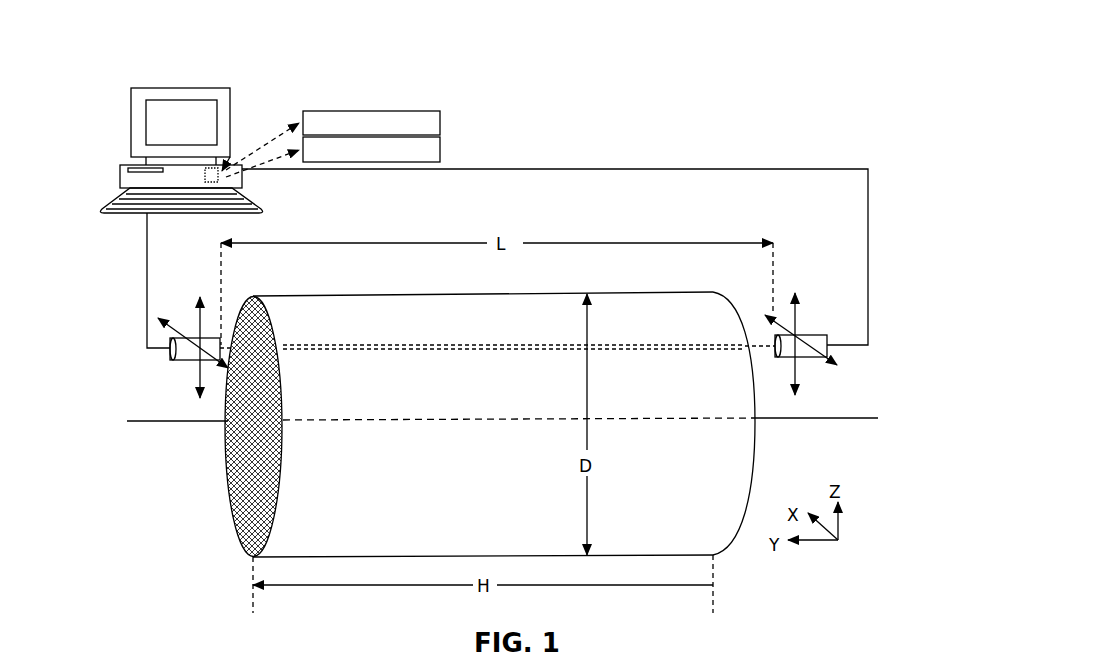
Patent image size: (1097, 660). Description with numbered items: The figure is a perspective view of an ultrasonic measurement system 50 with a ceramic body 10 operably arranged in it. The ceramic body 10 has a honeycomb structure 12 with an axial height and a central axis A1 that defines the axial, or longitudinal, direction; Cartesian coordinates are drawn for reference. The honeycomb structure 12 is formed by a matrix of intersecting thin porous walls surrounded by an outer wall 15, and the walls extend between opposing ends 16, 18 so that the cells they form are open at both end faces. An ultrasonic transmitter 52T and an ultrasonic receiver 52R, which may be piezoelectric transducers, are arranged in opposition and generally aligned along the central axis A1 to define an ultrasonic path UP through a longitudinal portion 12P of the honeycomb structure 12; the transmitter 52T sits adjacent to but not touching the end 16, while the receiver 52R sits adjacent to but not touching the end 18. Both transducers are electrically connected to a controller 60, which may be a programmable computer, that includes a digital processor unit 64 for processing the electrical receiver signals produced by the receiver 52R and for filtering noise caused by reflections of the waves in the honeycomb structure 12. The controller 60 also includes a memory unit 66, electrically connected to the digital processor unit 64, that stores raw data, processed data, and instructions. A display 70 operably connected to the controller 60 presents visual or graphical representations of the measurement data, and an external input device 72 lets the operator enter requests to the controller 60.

The ceramic body 10 is at (471, 407).
The honeycomb structure 12 is at (217, 427).
The longitudinal portion 12P is at (462, 348).
The outer wall 15 is at (303, 495).
The end 16 is at (220, 438).
The end 18 is at (757, 452).
The ultrasonic measurement system 50 is at (813, 134).
The ultrasonic transmitter 52T is at (188, 360).
The ultrasonic receiver 52R is at (812, 335).
The controller 60 is at (203, 143).
The digital processor unit 64 is at (440, 116).
The memory unit 66 is at (440, 153).
The display 70 is at (131, 123).
The external input device 72 is at (262, 211).
The ultrasonic path UP is at (638, 336).
The central axis A1 is at (830, 418).